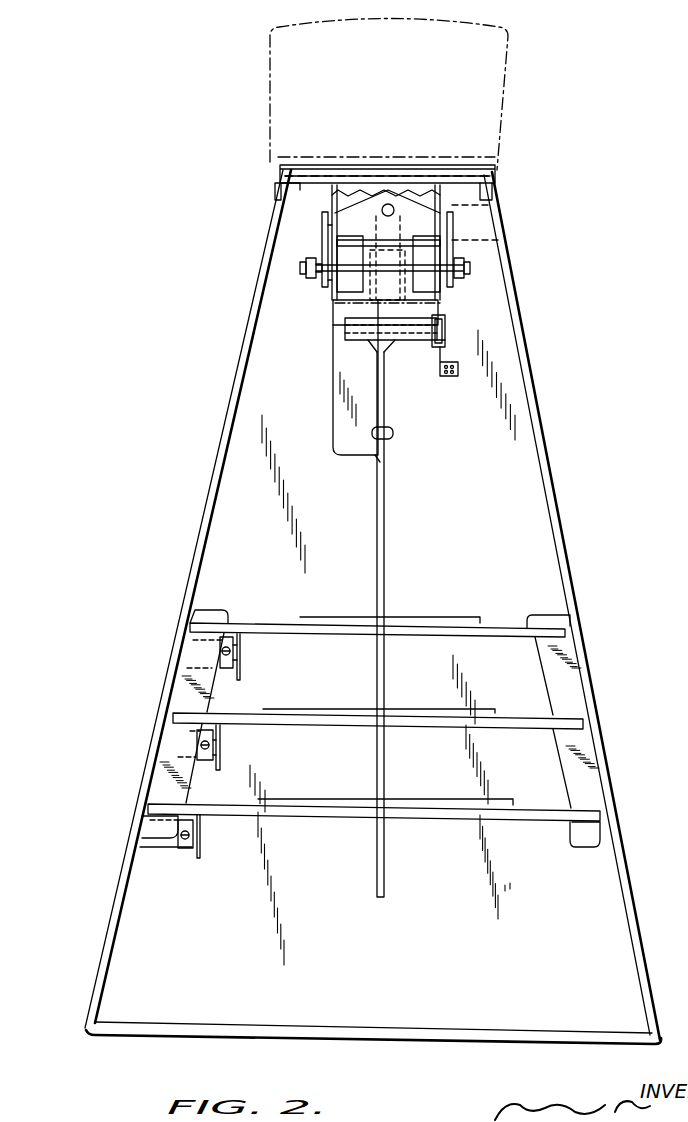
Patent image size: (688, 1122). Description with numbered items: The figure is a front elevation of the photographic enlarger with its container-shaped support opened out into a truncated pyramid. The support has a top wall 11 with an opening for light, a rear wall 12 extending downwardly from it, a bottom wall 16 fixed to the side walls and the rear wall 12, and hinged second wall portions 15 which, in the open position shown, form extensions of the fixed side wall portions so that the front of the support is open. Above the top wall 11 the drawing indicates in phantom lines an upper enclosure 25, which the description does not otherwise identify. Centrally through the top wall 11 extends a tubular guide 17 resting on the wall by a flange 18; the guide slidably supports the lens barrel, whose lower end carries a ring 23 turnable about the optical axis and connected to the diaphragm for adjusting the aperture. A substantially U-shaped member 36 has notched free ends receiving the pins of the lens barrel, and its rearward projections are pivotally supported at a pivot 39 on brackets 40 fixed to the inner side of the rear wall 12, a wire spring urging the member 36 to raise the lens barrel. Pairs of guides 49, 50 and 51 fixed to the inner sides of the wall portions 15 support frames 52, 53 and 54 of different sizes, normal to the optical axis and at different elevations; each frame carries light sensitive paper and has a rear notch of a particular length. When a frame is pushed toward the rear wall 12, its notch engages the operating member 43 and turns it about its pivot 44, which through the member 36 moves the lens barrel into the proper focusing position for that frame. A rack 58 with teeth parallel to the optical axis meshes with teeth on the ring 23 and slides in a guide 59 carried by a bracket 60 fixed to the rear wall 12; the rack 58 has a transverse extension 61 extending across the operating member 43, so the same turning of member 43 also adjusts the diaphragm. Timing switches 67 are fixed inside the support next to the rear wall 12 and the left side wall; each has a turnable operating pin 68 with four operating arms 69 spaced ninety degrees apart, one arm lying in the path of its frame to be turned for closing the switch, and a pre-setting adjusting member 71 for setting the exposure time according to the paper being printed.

The top wall 11 is at (305, 186).
The rear wall 12 is at (275, 990).
The second wall portion 15 is at (234, 390).
The bottom wall 16 is at (458, 1030).
The tubular guide 17 is at (492, 205).
The flange 18 is at (452, 166).
The ring 23 is at (330, 357).
The hood 25 is at (505, 115).
The U-shaped member 36 is at (457, 235).
The pivot 39 is at (312, 270).
The brackets 40 is at (470, 288).
The operating member 43 is at (380, 500).
The pivot 44 is at (393, 433).
The guides 49 is at (205, 612).
The guides 50 is at (175, 696).
The guides 51 is at (165, 830).
The frame 52 is at (515, 628).
The frame 53 is at (528, 718).
The frame 54 is at (545, 812).
The rack 58 is at (445, 328).
The guide 59 is at (445, 340).
The bracket 60 is at (448, 378).
The transverse extension 61 is at (402, 342).
The timing switches 67 is at (222, 672).
The operating pin 68 is at (240, 648).
The operating arms 69 is at (222, 755).
The pre-setting adjusting member 71 is at (200, 758).